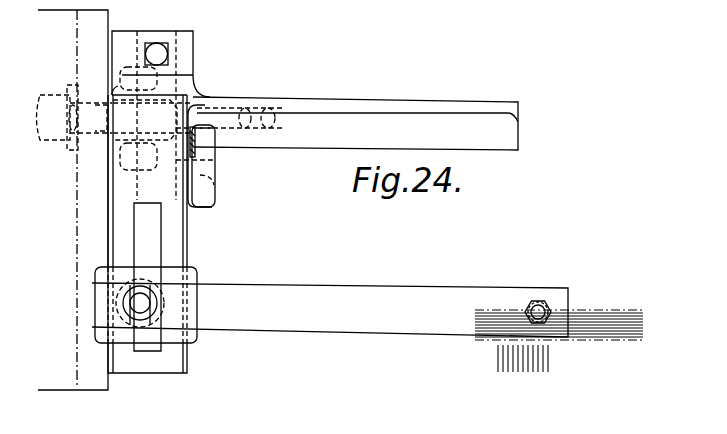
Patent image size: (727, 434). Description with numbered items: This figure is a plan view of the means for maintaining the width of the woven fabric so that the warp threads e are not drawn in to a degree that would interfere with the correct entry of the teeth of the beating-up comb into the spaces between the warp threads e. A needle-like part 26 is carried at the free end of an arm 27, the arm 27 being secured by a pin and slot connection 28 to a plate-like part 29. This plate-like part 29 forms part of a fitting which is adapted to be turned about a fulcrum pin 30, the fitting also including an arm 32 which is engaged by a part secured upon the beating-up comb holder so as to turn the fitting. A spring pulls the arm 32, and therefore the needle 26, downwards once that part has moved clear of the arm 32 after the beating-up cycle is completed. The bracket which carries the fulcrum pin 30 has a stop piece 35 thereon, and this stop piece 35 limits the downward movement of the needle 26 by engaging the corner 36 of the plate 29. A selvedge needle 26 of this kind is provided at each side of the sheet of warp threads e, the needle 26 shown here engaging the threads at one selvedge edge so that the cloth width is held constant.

The needle-like part 26 is at (548, 283).
The arm 27 is at (330, 310).
The pin and slot connection 28 is at (153, 254).
The plate-like part 29 is at (180, 238).
The fulcrum pin 30 is at (147, 32).
The arm 32 is at (355, 123).
The stop piece 35 is at (208, 139).
The corner 36 is at (195, 137).
The warp threads e is at (603, 322).